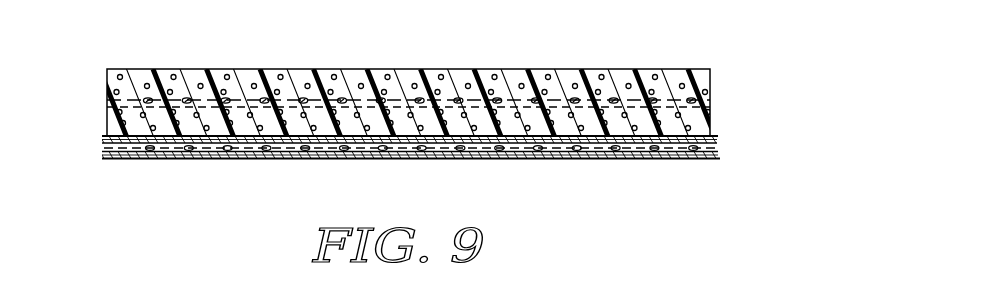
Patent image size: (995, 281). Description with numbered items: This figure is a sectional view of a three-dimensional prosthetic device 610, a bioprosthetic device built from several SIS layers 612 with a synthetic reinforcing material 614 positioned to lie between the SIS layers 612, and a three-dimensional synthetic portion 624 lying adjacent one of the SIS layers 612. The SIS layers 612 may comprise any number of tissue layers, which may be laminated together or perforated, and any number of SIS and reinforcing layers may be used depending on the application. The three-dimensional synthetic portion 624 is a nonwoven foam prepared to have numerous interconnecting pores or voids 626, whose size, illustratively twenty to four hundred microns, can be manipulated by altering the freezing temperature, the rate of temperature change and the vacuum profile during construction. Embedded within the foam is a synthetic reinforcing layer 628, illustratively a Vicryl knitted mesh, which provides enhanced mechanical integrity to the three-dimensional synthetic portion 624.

The three-dimensional prosthetic device 610 is at (737, 121).
The SIS layers 612 is at (716, 137).
The synthetic reinforcing material 614 is at (102, 147).
The three-dimensional synthetic portion 624 is at (517, 73).
The voids 626 is at (117, 92).
The synthetic reinforcing layer 628 is at (620, 100).